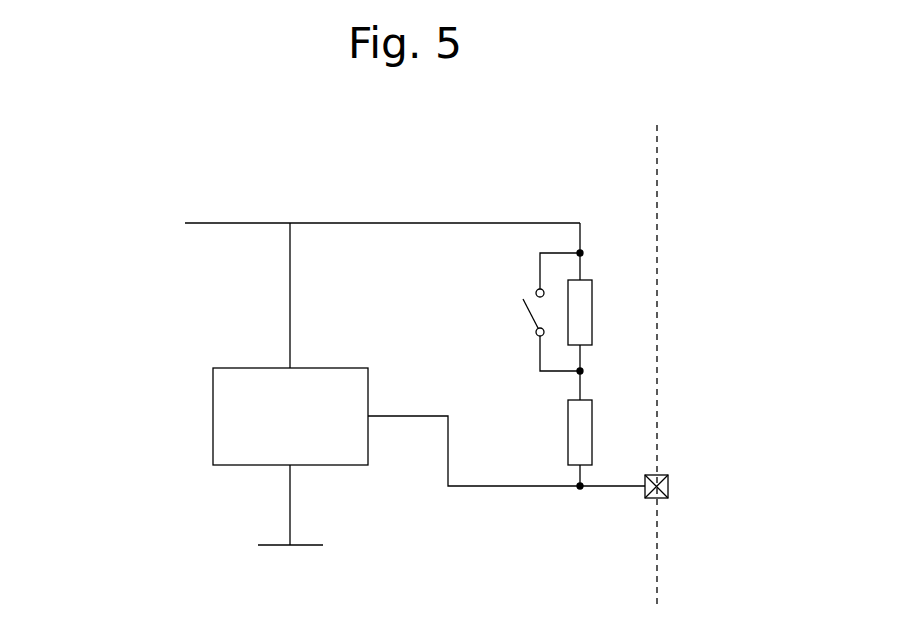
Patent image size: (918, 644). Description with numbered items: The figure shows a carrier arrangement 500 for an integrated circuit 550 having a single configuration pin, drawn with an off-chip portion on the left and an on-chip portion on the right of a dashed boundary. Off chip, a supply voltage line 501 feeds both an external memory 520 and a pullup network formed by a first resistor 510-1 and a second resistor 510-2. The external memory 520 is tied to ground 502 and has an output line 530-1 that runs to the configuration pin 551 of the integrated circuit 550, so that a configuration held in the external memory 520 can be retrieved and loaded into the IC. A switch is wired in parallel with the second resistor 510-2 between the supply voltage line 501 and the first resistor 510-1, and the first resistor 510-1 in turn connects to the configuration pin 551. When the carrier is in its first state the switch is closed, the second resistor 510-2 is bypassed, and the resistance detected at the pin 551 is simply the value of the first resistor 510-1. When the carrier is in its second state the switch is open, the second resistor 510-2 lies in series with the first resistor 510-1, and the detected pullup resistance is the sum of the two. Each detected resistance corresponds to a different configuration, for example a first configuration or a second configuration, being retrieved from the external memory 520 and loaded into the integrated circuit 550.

The carrier arrangement 500 is at (150, 141).
The supply voltage line 501 is at (142, 219).
The ground 502 is at (268, 583).
The first resistor 510-1 is at (568, 437).
The second resistor 510-2 is at (592, 322).
The external memory 520 is at (213, 410).
The output line 530-1 is at (414, 414).
The integrated circuit 550 is at (520, 272).
The configuration pin 551 is at (668, 488).